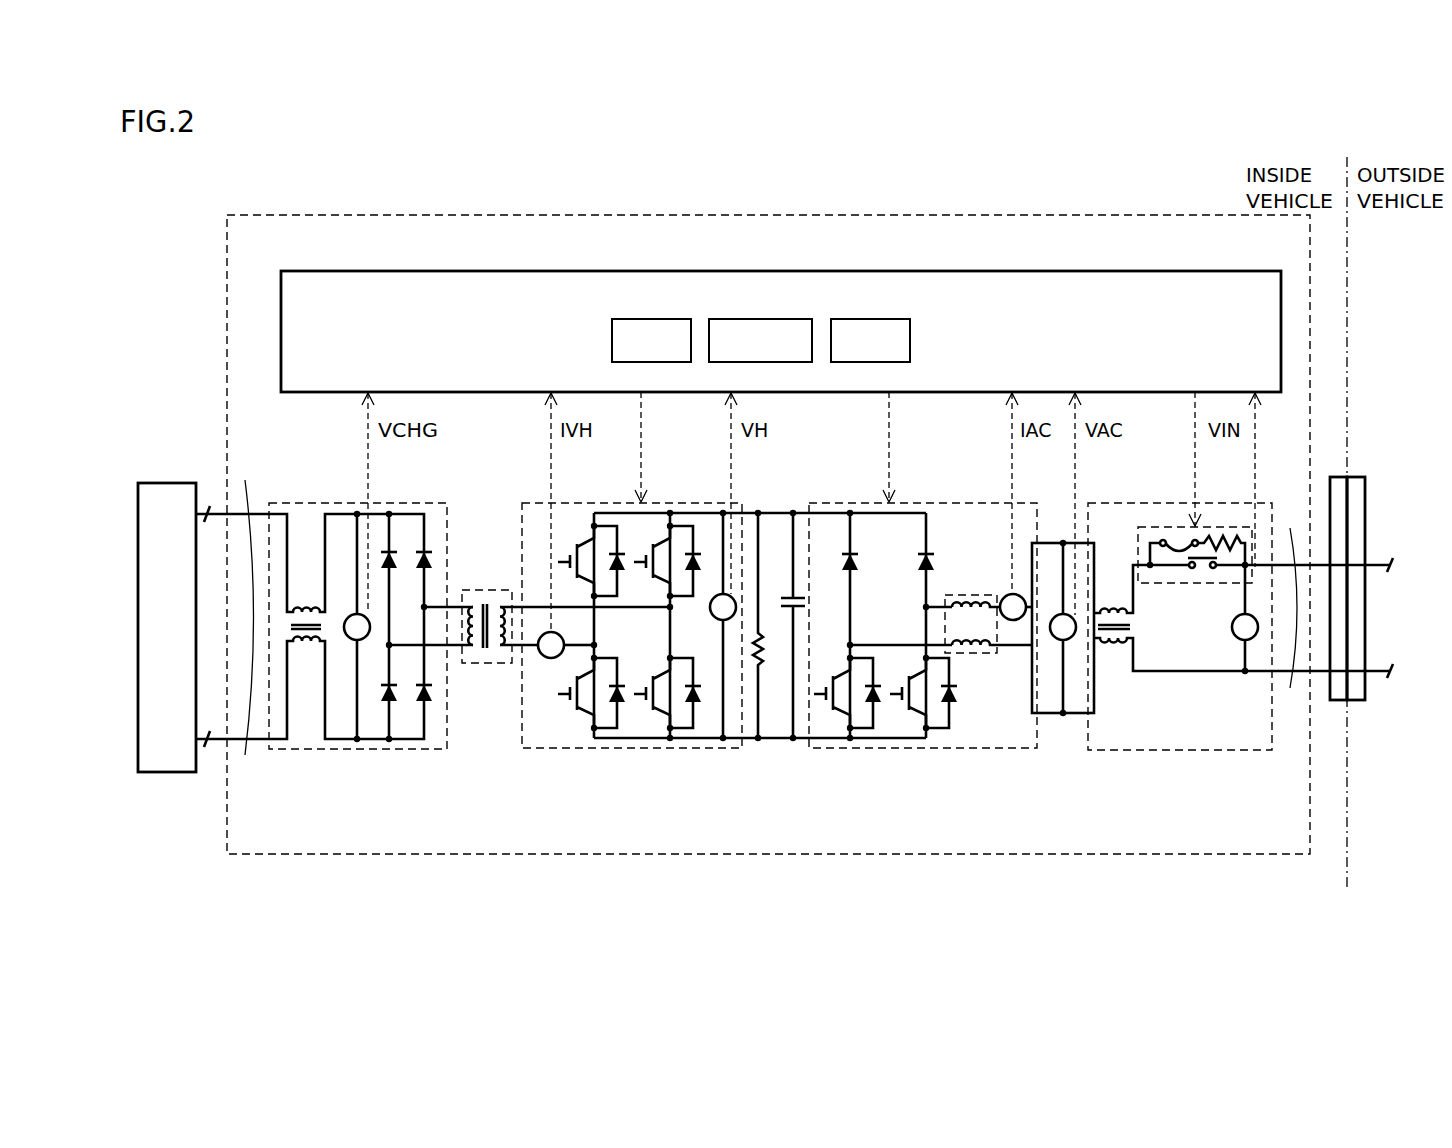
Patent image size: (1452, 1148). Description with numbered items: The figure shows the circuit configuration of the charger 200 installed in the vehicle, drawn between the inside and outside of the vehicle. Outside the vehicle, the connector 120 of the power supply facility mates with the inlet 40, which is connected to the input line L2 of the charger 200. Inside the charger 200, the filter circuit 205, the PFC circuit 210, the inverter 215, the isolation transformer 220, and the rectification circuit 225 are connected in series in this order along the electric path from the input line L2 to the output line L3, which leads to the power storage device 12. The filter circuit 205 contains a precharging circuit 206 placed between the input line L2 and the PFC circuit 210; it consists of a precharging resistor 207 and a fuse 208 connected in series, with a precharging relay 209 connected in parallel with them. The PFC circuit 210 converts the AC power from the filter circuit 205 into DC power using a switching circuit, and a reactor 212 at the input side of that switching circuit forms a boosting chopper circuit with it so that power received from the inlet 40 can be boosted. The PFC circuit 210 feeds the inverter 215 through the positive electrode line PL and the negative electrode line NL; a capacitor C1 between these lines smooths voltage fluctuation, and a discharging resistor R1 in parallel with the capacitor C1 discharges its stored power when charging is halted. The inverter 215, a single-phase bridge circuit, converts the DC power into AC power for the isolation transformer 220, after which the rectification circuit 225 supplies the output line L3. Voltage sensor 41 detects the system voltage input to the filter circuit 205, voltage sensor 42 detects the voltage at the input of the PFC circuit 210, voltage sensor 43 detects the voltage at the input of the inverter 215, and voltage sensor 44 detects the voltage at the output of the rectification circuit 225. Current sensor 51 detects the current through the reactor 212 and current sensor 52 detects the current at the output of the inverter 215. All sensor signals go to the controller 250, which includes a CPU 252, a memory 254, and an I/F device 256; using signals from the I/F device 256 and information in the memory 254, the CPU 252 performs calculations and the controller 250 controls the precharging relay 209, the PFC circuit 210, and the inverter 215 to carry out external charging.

The power storage device 12 is at (165, 482).
The charger 200 is at (751, 215).
The controller 250 is at (751, 271).
The CPU 252 is at (648, 319).
The memory 254 is at (752, 319).
The I/F device 256 is at (853, 319).
The rectification circuit 225 is at (436, 752).
The isolation transformer 220 is at (487, 665).
The inverter 215 is at (720, 750).
The PFC circuit 210 is at (1003, 750).
The filter circuit 205 is at (1238, 752).
The reactor 212 is at (986, 654).
The precharging circuit 206 is at (1137, 548).
The precharging resistor 207 is at (1228, 540).
The fuse 208 is at (1168, 537).
The precharging relay 209 is at (1203, 574).
The inlet 40 is at (1337, 474).
The connector 120 is at (1352, 474).
The voltage sensor 41 is at (1236, 636).
The voltage sensor 42 is at (1061, 641).
The voltage sensor 43 is at (712, 617).
The voltage sensor 44 is at (353, 638).
The current sensor 51 is at (1004, 594).
The current sensor 52 is at (547, 658).
The input line L2 is at (1291, 596).
The output line L3 is at (246, 605).
The positive electrode line PL is at (775, 512).
The negative electrode line NL is at (772, 740).
The capacitor C1 is at (789, 596).
The discharging resistor R1 is at (761, 661).